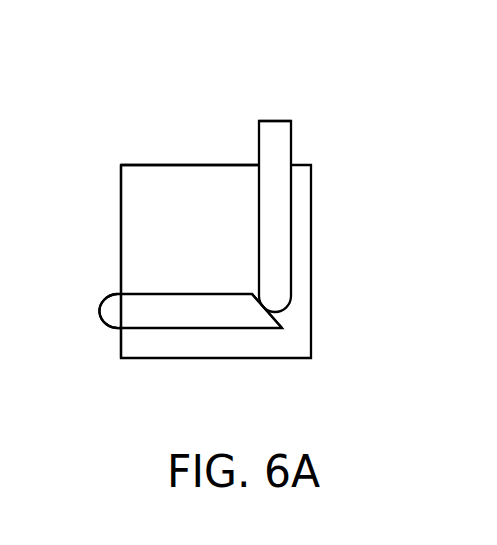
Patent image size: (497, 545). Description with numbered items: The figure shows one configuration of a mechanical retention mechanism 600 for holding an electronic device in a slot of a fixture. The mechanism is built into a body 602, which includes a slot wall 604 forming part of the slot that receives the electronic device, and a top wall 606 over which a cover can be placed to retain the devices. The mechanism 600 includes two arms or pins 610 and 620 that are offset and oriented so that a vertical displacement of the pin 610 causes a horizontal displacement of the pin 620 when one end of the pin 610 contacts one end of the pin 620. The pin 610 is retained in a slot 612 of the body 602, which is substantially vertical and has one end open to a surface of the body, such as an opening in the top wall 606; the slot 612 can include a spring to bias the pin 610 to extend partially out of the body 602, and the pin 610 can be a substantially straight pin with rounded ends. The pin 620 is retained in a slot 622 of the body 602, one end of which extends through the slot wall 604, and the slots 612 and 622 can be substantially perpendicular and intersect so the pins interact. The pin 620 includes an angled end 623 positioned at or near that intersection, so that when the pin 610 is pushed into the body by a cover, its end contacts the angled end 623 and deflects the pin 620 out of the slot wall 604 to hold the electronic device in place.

The mechanism 600 is at (173, 79).
The body 602 is at (145, 176).
The slot wall 604 is at (126, 278).
The top wall 606 is at (173, 164).
The pin 610 is at (292, 232).
The slot 612 is at (259, 143).
The pin 620 is at (182, 315).
The slot 622 is at (120, 328).
The angled end 623 is at (258, 320).